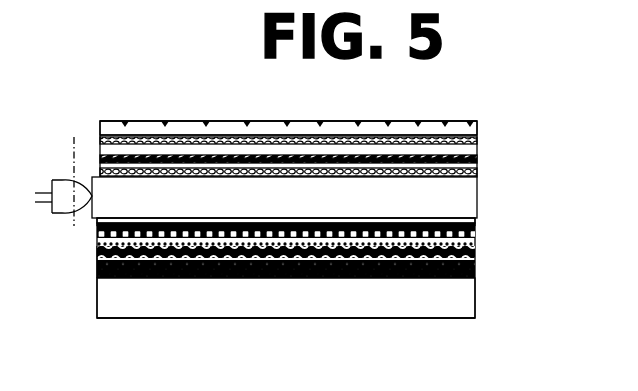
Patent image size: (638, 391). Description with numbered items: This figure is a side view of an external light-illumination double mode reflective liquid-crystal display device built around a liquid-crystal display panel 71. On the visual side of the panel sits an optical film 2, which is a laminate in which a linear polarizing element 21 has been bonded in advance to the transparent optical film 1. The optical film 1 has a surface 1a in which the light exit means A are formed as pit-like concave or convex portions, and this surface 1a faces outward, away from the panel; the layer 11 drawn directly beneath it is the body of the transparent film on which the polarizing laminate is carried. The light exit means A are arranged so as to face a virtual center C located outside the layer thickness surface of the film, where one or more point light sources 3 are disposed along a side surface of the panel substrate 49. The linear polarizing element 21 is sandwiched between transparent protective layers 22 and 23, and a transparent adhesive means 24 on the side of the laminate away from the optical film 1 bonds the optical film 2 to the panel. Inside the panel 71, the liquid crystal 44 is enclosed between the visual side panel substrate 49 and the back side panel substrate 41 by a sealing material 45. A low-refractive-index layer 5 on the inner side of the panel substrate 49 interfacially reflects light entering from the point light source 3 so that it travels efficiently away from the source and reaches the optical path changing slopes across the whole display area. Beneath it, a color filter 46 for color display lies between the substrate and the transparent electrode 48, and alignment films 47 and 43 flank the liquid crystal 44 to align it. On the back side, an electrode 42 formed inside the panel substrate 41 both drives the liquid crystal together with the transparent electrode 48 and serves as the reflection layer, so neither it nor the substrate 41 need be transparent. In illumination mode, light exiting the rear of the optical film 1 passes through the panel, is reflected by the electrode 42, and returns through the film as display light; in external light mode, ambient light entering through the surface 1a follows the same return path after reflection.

The optical film 1 is at (477, 127).
The surface 1a is at (433, 121).
The base film 11 is at (477, 135).
The transparent protective layer 22 is at (477, 146).
The linear polarizing element 21 is at (477, 158).
The transparent protective layer 23 is at (477, 169).
The transparent adhesive means 24 is at (477, 178).
The optical film 2 is at (507, 112).
The point light source 3 is at (66, 197).
The panel substrate 49 is at (477, 210).
The low-refractive-index layer 5 is at (477, 223).
The color filter 46 is at (477, 233).
The transparent electrode 48 is at (477, 243).
The alignment film 47 is at (477, 252).
The alignment film 43 is at (477, 265).
The electrode 42 is at (477, 277).
The panel substrate 41 is at (477, 300).
The liquid-crystal display panel 71 is at (543, 197).
The sealing material 45 is at (97, 262).
The liquid crystal 44 is at (348, 278).
The light exit means A is at (165, 121).
The virtual center C is at (74, 170).